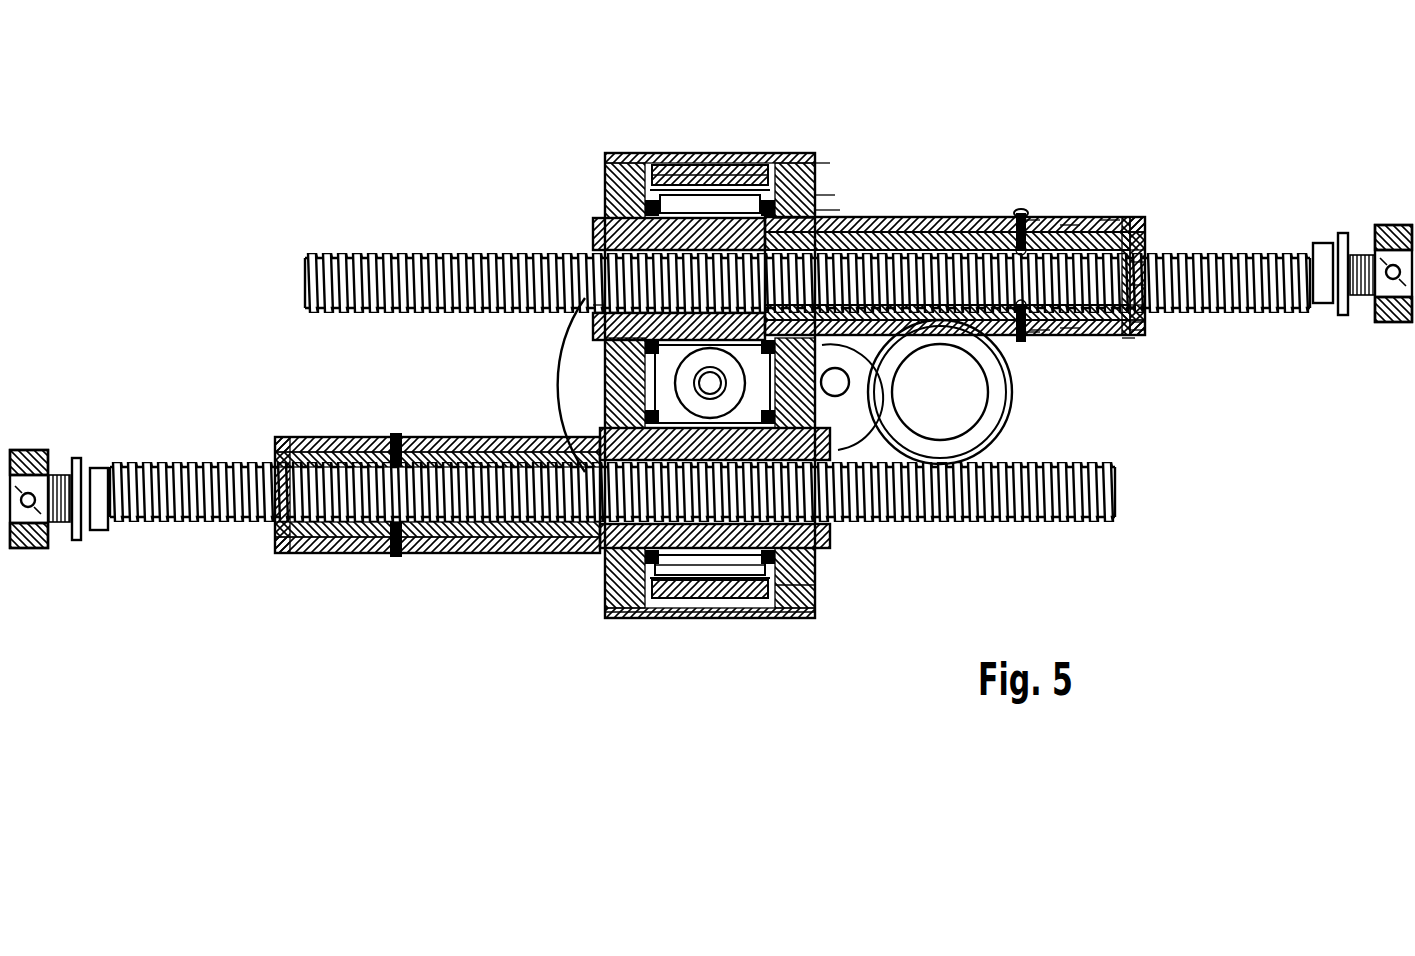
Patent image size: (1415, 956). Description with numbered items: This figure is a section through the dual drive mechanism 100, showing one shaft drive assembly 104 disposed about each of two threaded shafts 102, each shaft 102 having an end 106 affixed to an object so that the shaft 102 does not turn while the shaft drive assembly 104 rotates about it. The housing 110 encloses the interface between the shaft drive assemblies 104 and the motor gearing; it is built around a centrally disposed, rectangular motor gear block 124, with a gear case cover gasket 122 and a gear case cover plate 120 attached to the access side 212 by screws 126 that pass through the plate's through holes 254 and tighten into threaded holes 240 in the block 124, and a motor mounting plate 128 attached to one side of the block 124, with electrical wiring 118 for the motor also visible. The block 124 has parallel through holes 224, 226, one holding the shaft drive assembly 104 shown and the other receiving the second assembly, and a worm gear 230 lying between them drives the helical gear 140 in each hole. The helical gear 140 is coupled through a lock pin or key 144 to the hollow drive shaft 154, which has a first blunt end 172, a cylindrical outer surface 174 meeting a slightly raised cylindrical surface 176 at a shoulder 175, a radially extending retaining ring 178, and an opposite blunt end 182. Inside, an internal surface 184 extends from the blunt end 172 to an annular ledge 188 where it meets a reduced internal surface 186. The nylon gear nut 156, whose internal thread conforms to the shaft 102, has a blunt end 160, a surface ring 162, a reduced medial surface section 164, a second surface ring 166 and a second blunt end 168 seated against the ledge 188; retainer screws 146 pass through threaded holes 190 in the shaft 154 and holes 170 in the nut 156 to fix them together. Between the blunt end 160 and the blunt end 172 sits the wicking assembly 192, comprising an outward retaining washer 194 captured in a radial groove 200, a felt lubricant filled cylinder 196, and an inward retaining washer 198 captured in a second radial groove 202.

The dual drive mechanism 100 is at (972, 148).
The threaded shaft 102 is at (1305, 245).
The shaft drive assembly 104 is at (1092, 217).
The end 106 is at (1395, 322).
The housing 110 is at (733, 145).
The electrical wiring 118 is at (885, 405).
The gear case cover plate 120 is at (600, 205).
The gear case cover gasket 122 is at (762, 152).
The motor gear block 124 is at (762, 625).
The screw 126 is at (603, 155).
The motor mounting plate 128 is at (572, 372).
The helical gear 140 is at (718, 152).
The lock pin or key 144 is at (688, 152).
The retainer screw 146 is at (1020, 212).
The hollow drive shaft 154 is at (990, 212).
The gear nut 156 is at (848, 218).
The blunt end 160 is at (1138, 232).
The surface ring 162 is at (1030, 330).
The medial surface section 164 is at (910, 216).
The second surface ring 166 is at (828, 175).
The second blunt end 168 is at (603, 307).
The hole 170 is at (1070, 215).
The first blunt end 172 is at (1140, 322).
The cylindrical outer surface 174 is at (942, 216).
The shoulder 175 is at (840, 215).
The raised cylindrical surface 176 is at (835, 195).
The retaining ring 178 is at (745, 152).
The blunt end 182 is at (598, 235).
The internal surface 184 is at (1110, 220).
The reduced internal surface 186 is at (597, 248).
The annular ledge 188 is at (818, 155).
The hole 190 is at (1040, 216).
The wicking assembly 192 is at (1135, 335).
The retaining washer 194 is at (1150, 285).
The lubricant filled cylinder 196 is at (1138, 330).
The retaining washer 198 is at (1130, 338).
The radial groove 200 is at (1143, 262).
The second radial groove 202 is at (1126, 218).
The access side 212 is at (818, 585).
The through hole 224 is at (698, 152).
The through hole 226 is at (655, 620).
The worm gear 230 is at (598, 393).
The threaded hole 240 is at (680, 152).
The through hole 254 is at (818, 612).